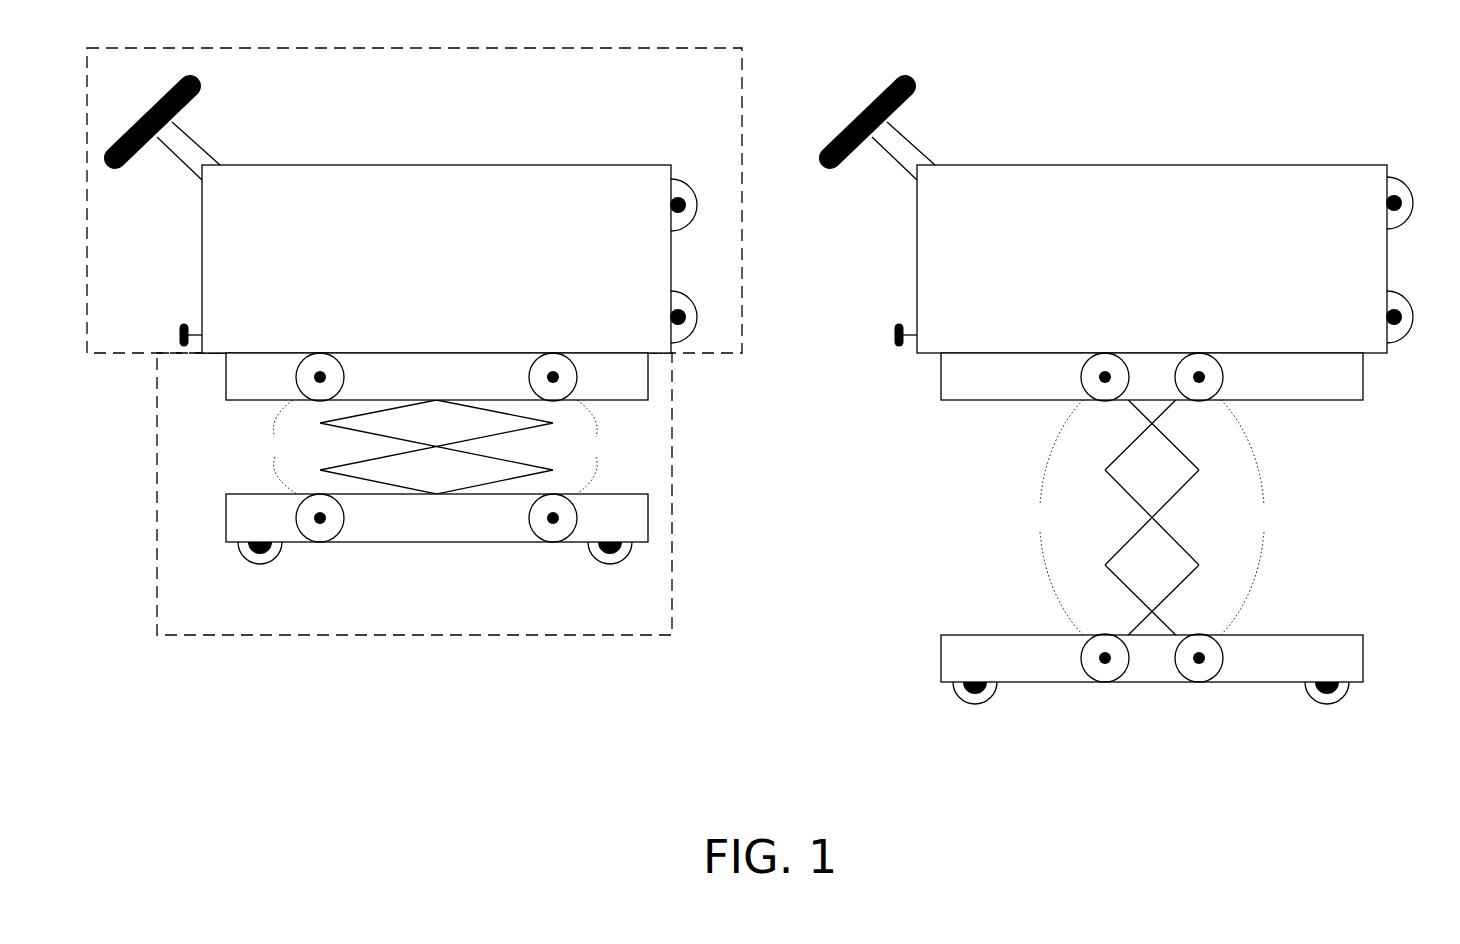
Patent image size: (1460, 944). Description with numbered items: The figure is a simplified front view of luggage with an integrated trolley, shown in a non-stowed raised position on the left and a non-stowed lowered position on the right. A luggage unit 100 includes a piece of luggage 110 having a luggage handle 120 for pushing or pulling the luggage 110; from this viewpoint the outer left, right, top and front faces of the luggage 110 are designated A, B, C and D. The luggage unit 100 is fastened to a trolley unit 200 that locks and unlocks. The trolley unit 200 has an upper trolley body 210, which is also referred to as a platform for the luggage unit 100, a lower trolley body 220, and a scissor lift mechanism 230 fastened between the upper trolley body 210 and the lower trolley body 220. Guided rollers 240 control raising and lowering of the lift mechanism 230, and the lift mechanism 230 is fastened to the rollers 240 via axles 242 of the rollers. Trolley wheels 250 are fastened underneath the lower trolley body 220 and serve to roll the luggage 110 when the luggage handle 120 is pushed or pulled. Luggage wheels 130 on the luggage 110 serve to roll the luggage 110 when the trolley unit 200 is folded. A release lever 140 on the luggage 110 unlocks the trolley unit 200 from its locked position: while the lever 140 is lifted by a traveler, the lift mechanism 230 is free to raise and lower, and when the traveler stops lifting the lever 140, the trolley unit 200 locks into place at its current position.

The luggage unit 100 is at (742, 317).
The piece of luggage 110 is at (272, 165).
The luggage handle 120 is at (190, 105).
The luggage wheels 130 is at (697, 200).
The release lever 140 is at (178, 334).
The trolley unit 200 is at (672, 590).
The upper trolley body 210 is at (226, 377).
The lower trolley body 220 is at (226, 518).
The scissor lift mechanism 230 is at (513, 462).
The guided rollers 240 is at (769, 517).
The axles 242 is at (296, 377).
The trolley wheels 250 is at (608, 562).